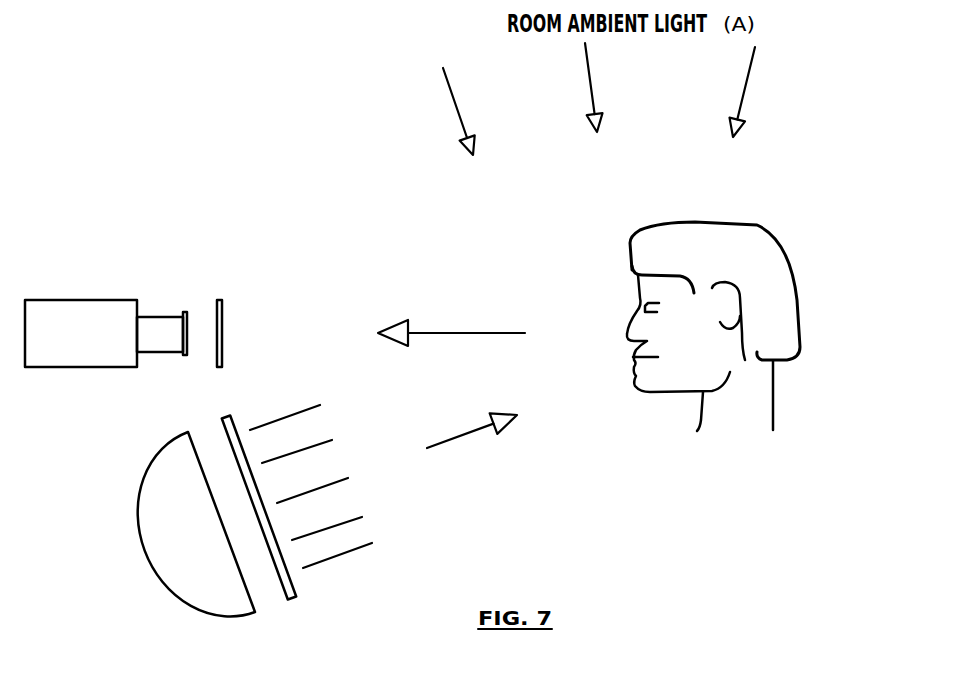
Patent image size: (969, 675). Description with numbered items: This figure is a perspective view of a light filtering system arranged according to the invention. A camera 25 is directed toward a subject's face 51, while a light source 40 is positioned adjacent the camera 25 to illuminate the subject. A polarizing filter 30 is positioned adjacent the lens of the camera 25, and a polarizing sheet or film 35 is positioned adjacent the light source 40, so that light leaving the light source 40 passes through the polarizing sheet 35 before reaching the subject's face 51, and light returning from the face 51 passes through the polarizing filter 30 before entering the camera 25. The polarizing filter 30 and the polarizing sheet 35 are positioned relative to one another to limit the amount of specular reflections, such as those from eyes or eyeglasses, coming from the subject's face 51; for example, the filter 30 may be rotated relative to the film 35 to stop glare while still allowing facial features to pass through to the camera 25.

The camera 25 is at (106, 374).
The polarizing filter 30 is at (289, 310).
The polarizing sheet or film 35 is at (300, 583).
The light source 40 is at (156, 546).
The subject's face 51 is at (713, 353).